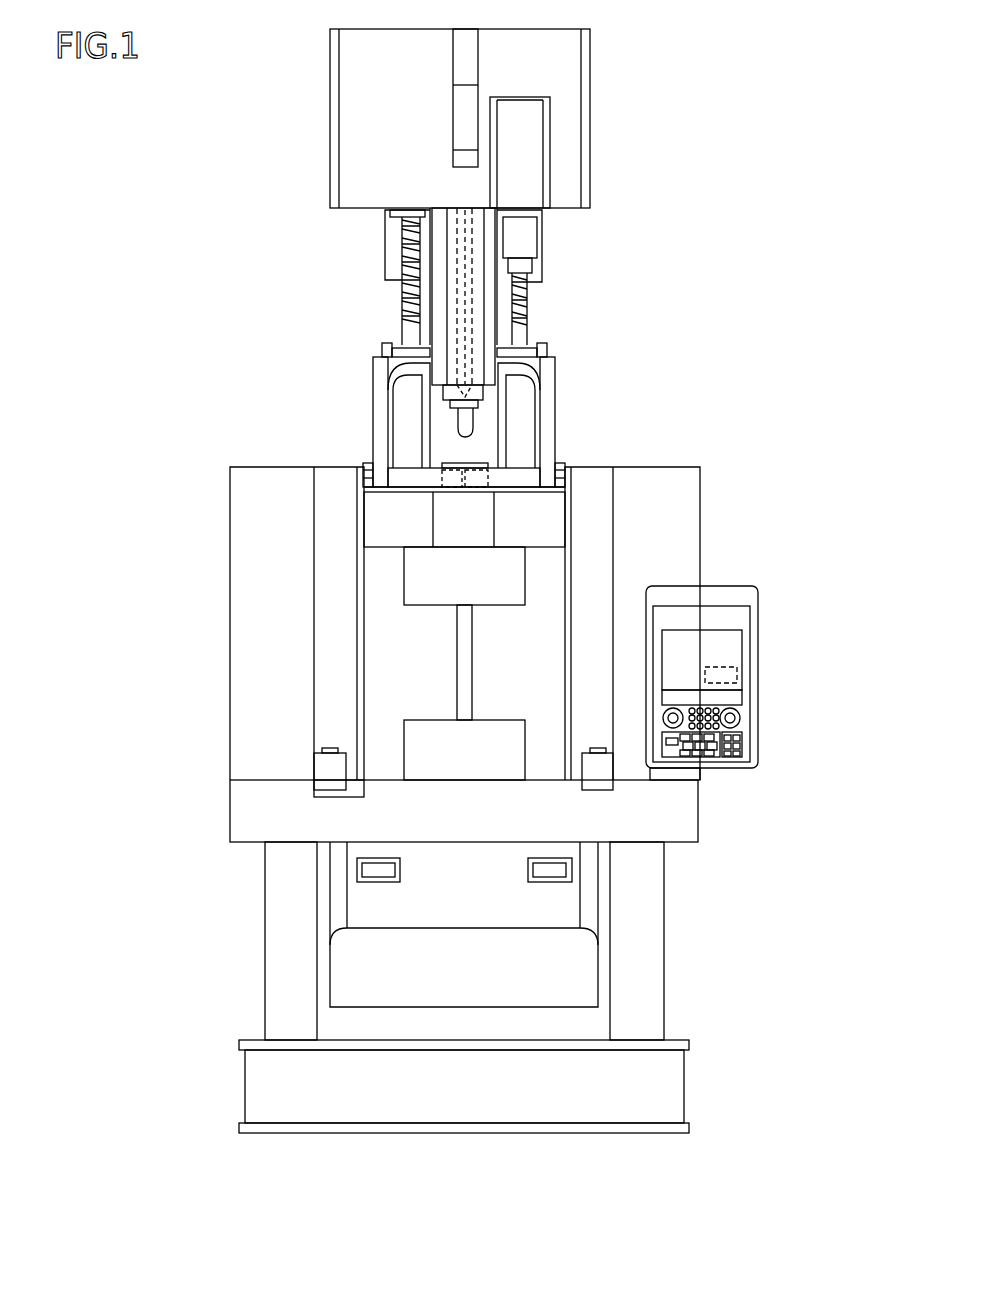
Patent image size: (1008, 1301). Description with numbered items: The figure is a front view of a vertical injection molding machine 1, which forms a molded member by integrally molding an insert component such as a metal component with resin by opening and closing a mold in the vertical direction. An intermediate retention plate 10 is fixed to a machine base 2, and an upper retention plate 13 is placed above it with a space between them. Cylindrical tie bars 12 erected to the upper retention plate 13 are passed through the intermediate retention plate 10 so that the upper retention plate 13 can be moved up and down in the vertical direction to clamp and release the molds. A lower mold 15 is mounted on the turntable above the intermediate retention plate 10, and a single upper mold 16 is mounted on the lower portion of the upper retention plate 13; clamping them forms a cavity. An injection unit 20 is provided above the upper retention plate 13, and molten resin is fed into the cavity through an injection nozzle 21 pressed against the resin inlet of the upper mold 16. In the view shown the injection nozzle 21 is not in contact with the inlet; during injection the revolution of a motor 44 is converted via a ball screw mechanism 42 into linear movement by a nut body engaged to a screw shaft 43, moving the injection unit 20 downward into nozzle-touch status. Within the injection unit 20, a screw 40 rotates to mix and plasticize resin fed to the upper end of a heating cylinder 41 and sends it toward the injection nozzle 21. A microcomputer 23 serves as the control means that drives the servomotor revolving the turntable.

The vertical injection molding machine 1 is at (672, 68).
The machine base 2 is at (642, 930).
The intermediate retention plate 10 is at (685, 818).
The tie bars 12 is at (470, 655).
The upper retention plate 13 is at (530, 517).
The lower mold 15 is at (457, 752).
The upper mold 16 is at (510, 570).
The injection unit 20 is at (670, 297).
The injection nozzle 21 is at (452, 425).
The microcomputer 23 is at (740, 680).
The screw 40 is at (478, 237).
The heating cylinder 41 is at (437, 282).
The ball screw mechanism 42 is at (398, 307).
The screw shaft 43 is at (412, 334).
The motor 44 is at (524, 237).